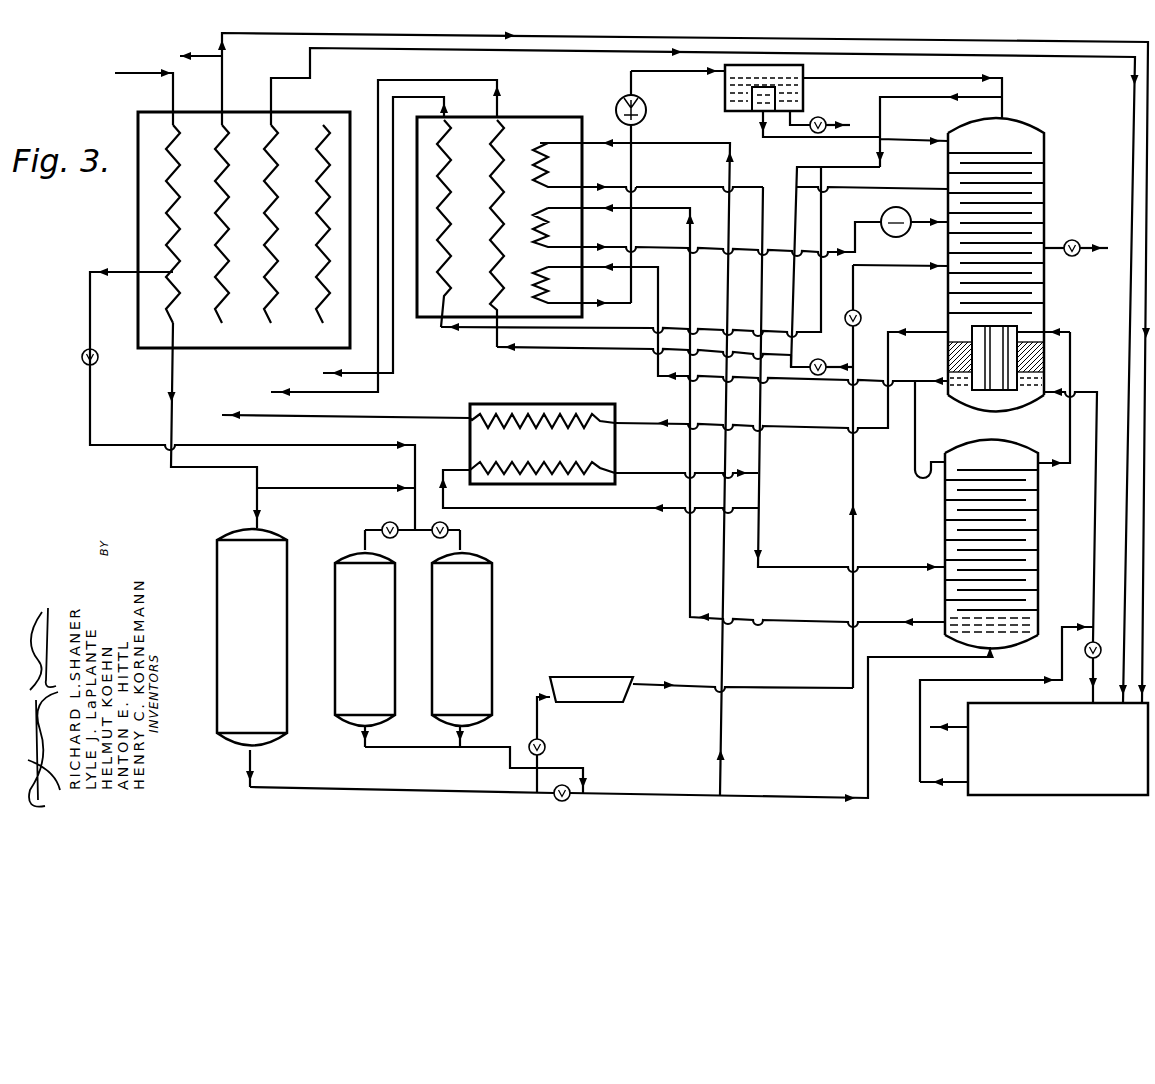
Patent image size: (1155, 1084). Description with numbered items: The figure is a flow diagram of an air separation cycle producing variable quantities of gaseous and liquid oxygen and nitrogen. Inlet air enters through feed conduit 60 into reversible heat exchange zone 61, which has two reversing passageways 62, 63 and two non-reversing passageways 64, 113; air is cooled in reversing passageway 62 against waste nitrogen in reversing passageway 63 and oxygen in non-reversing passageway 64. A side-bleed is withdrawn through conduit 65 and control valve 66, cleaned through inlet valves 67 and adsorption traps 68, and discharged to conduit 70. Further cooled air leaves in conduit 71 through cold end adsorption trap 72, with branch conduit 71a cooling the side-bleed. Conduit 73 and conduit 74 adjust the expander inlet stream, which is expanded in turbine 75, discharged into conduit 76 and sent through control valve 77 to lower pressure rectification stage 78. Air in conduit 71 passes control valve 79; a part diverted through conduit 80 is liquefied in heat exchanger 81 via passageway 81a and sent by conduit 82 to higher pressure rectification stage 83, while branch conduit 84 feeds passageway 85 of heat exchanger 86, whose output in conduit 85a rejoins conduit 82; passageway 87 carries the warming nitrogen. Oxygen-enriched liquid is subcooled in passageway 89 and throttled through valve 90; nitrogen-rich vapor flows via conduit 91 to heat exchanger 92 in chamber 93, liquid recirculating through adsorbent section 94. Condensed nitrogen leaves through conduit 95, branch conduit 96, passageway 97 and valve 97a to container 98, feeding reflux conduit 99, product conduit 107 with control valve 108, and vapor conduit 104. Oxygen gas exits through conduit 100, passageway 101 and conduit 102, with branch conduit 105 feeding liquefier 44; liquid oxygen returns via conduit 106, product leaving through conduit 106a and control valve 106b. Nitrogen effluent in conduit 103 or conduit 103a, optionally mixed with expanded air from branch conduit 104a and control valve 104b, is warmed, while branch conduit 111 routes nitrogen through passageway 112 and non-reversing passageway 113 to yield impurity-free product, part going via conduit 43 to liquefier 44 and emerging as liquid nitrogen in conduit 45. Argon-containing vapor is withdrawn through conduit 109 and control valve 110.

The conduit 43 is at (404, 50).
The liquefier 44 is at (979, 710).
The conduit 45 is at (948, 731).
The feed conduit 60 is at (128, 71).
The reversible heat exchange zone 61 is at (138, 197).
The reversing passageway 62 is at (166, 232).
The reversing passageway 63 is at (318, 306).
The non-reversing passageway 64 is at (217, 316).
The conduit 65 is at (89, 297).
The control valve 66 is at (81, 357).
The inlet valves 67 is at (436, 538).
The adsorption traps 68 is at (442, 634).
The conduit 70 is at (501, 746).
The conduit 71 is at (168, 378).
The branch conduit 71a is at (321, 490).
The cold end adsorption trap 72 is at (228, 558).
The conduit 73 is at (569, 767).
The conduit 74 is at (535, 781).
The turbine 75 is at (586, 685).
The conduit 76 is at (690, 684).
The control valve 77 is at (861, 312).
The lower pressure rectification stage 78 is at (947, 257).
The control valve 79 is at (572, 796).
The conduit 80 is at (718, 772).
The heat exchanger 81 is at (513, 403).
The passageway 81a is at (488, 465).
The conduit 82 is at (759, 522).
The higher pressure rectification stage 83 is at (945, 508).
The branch conduit 84 is at (721, 470).
The passageway 85 is at (533, 177).
The conduit 85a is at (670, 186).
The heat exchanger 86 is at (548, 116).
The passageway 87 is at (499, 153).
The passageway 89 is at (533, 235).
The valve 90 is at (908, 216).
The conduit 91 is at (1070, 422).
The heat exchanger 92 is at (1020, 329).
The chamber 93 is at (977, 399).
The adsorbent section 94 is at (948, 350).
The conduit 95 is at (918, 382).
The branch conduit 96 is at (818, 377).
The passageway 97 is at (533, 298).
The valve 97a is at (622, 100).
The container 98 is at (725, 98).
The conduit 99 is at (769, 139).
The conduit 100 is at (913, 331).
The passageway 101 is at (565, 411).
The conduit 102 is at (214, 55).
The conduit 103 is at (491, 82).
The conduit 103a is at (899, 188).
The conduit 104 is at (988, 77).
The branch conduit 104a is at (830, 368).
The control valve 104b is at (663, 357).
The branch conduit 105 is at (251, 36).
The conduit 106 is at (918, 768).
The conduit 106a is at (1082, 674).
The control valve 106b is at (1084, 652).
The conduit 107 is at (833, 116).
The control valve 108 is at (819, 116).
The conduit 109 is at (1059, 239).
The control valve 110 is at (1072, 257).
The branch conduit 111 is at (270, 91).
The passageway 112 is at (437, 296).
The non-reversing passageway 113 is at (266, 314).